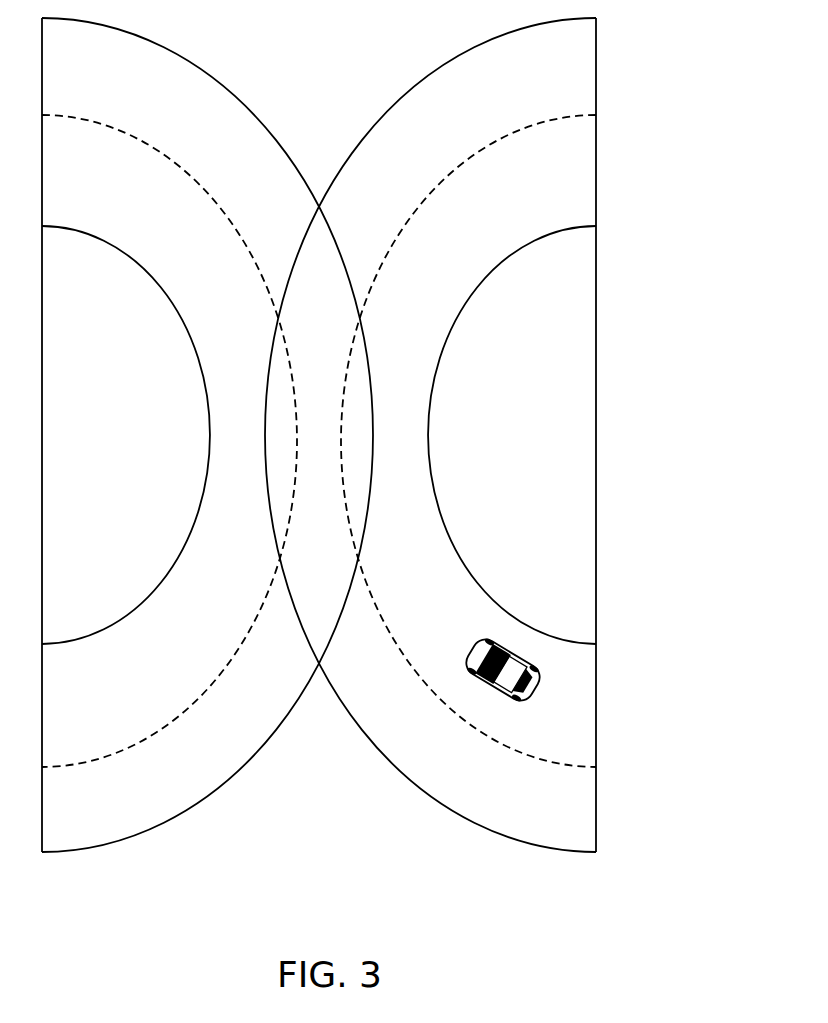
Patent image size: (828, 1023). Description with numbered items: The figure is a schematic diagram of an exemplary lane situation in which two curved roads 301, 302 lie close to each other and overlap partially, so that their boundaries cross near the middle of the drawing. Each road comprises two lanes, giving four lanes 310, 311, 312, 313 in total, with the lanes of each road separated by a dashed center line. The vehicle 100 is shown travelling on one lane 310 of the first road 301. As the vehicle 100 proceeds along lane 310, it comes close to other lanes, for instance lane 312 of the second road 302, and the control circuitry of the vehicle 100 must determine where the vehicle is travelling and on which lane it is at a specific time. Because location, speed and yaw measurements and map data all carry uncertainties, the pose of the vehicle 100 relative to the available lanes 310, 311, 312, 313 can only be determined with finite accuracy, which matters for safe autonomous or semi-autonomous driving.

The vehicle 100 is at (517, 653).
The road 301 is at (430, 435).
The road 302 is at (202, 438).
The lane 310 is at (412, 458).
The lane 311 is at (385, 690).
The lane 312 is at (260, 655).
The lane 313 is at (212, 439).